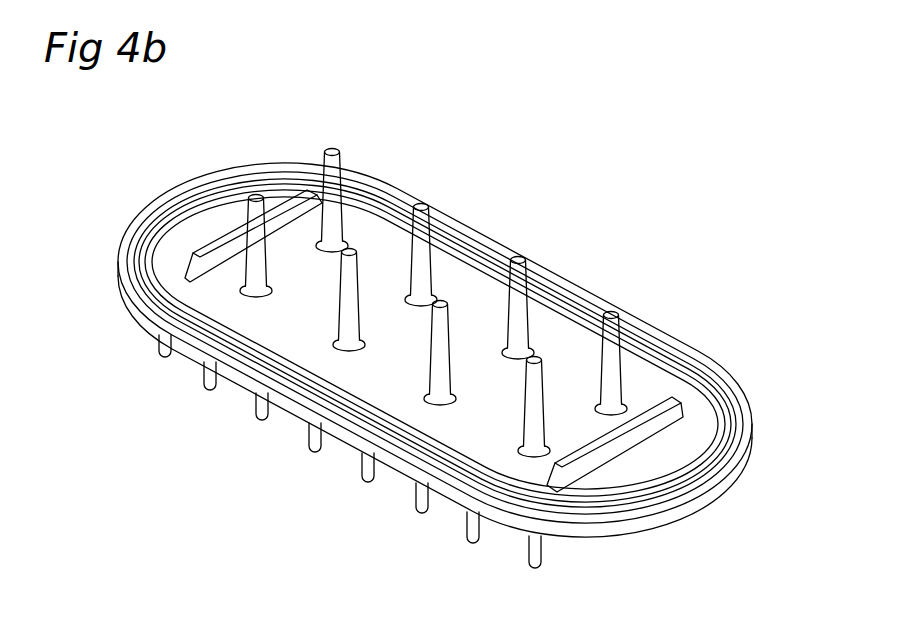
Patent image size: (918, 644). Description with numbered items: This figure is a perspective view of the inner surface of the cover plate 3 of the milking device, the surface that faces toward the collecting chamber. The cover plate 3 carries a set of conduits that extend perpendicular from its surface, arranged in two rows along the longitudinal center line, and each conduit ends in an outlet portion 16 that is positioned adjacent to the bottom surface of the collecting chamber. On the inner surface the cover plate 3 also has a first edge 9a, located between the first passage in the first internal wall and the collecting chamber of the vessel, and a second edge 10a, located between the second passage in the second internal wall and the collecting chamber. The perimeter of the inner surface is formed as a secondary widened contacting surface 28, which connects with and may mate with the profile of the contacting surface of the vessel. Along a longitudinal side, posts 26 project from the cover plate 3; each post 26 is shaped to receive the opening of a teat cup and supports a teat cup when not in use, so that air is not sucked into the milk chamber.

The cover plate 3 is at (665, 458).
The first edge 9a is at (290, 213).
The second edge 10a is at (675, 415).
The outlet portion 16 is at (336, 200).
The post 26 is at (316, 440).
The secondary widened contacting surface 28 is at (633, 500).